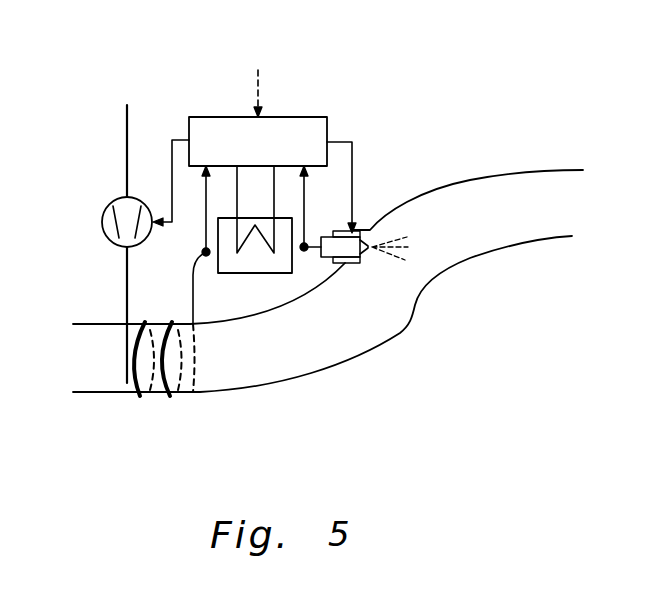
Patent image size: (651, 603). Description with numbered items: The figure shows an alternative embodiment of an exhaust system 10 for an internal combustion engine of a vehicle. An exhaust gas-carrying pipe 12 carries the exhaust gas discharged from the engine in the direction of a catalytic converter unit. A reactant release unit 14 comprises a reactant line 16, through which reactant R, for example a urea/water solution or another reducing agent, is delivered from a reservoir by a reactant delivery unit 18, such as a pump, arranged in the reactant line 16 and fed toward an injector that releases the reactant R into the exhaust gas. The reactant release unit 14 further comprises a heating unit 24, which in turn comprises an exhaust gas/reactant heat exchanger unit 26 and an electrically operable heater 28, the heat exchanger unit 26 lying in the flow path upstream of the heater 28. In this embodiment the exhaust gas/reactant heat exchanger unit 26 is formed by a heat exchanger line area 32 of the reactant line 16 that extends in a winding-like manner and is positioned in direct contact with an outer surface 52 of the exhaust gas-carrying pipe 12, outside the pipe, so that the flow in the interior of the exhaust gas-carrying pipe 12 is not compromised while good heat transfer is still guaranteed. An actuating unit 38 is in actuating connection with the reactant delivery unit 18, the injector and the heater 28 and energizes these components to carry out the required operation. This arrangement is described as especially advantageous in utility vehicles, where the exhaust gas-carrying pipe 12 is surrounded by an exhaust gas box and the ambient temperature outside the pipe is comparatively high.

The exhaust system 10 is at (493, 88).
The exhaust gas-carrying pipe 12 is at (415, 312).
The reactant release unit 14 is at (382, 98).
The reactant line 16 is at (126, 132).
The reactant delivery unit 18 is at (106, 207).
The heating unit 24 is at (251, 364).
The exhaust gas/reactant heat exchanger unit 26 is at (182, 416).
The heater 28 is at (293, 273).
The heat exchanger line area 32 is at (134, 363).
The actuating unit 38 is at (275, 117).
The outer surface 52 is at (95, 324).
The reactant R is at (398, 237).